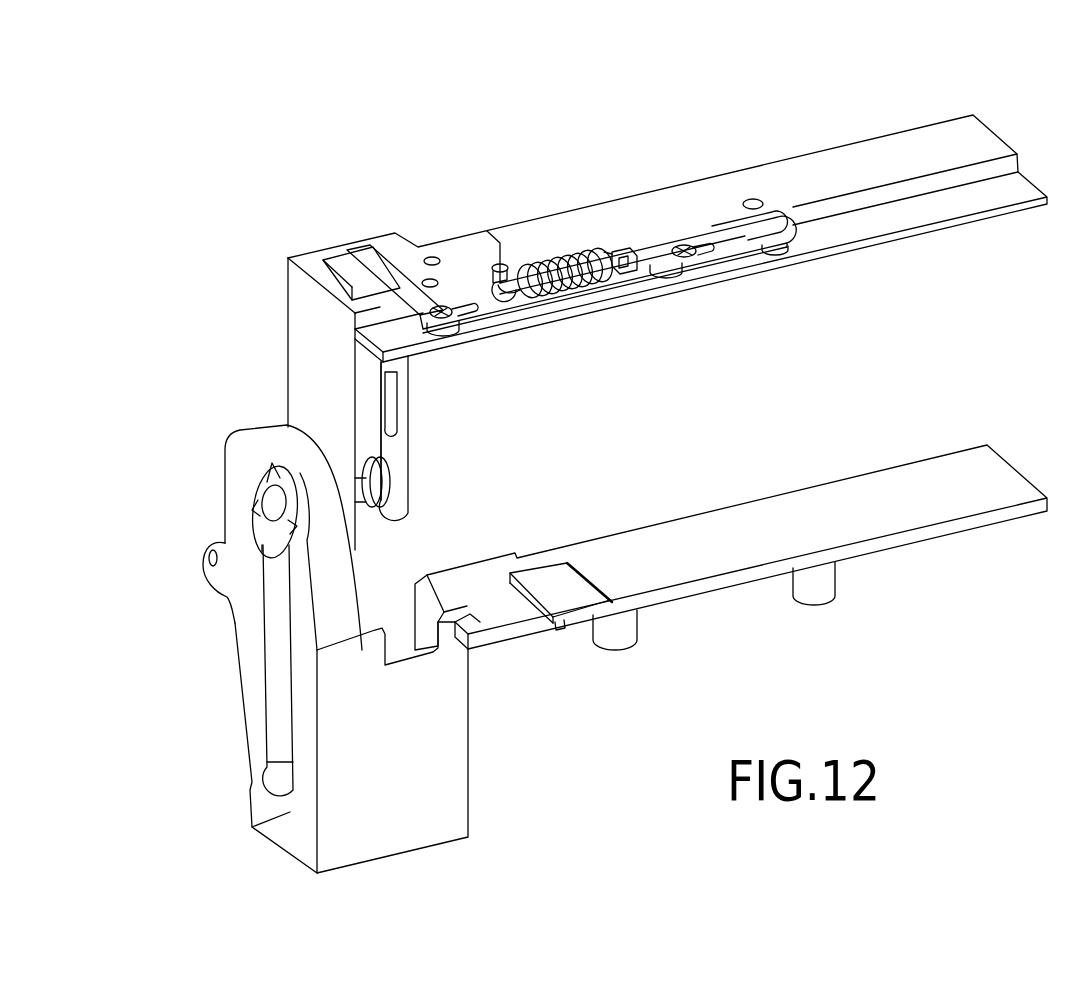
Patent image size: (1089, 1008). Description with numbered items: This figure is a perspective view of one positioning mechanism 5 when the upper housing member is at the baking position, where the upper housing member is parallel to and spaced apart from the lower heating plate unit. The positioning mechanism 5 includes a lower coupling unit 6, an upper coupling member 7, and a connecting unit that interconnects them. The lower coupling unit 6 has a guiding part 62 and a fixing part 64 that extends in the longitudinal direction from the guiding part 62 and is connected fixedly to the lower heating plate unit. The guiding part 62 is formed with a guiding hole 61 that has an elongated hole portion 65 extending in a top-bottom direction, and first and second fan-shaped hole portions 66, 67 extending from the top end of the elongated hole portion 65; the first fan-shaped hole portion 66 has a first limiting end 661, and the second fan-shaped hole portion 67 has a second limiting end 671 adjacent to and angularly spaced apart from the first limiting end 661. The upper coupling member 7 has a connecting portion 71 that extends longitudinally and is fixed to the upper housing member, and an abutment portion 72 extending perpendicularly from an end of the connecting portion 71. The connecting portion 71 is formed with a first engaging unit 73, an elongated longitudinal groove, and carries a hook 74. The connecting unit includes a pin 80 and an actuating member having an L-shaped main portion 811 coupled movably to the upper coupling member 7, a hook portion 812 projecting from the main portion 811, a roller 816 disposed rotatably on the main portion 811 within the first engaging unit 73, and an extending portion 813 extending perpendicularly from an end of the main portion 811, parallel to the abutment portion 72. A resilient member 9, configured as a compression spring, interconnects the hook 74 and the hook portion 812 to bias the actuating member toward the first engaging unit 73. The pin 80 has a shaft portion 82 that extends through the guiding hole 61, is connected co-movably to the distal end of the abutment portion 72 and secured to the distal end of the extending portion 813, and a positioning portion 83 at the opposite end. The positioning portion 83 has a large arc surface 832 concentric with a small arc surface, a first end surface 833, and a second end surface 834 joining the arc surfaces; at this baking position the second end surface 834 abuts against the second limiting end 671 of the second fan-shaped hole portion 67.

The positioning mechanism 5 is at (424, 146).
The lower coupling unit 6 is at (752, 610).
The upper coupling member 7 is at (856, 132).
The resilient member 9 is at (565, 250).
The guiding hole 61 is at (306, 733).
The guiding part 62 is at (285, 826).
The fixing part 64 is at (922, 507).
The elongated hole portion 65 is at (283, 663).
The first fan-shaped hole portion 66 is at (274, 450).
The second fan-shaped hole portion 67 is at (245, 545).
The connecting portion 71 is at (972, 153).
The abutment portion 72 is at (300, 395).
The first engaging unit 73 is at (830, 232).
The hook 74 is at (620, 255).
The pin 80 is at (255, 558).
The shaft portion 82 is at (377, 492).
The positioning portion 83 is at (268, 513).
The first limiting end 661 is at (263, 487).
The second limiting end 671 is at (268, 470).
The L-shaped main portion 811 is at (735, 245).
The hook portion 812 is at (500, 265).
The extending portion 813 is at (390, 450).
The roller 816 is at (785, 246).
The large arc surface 832 is at (272, 560).
The first end surface 833 is at (297, 543).
The second end surface 834 is at (250, 518).